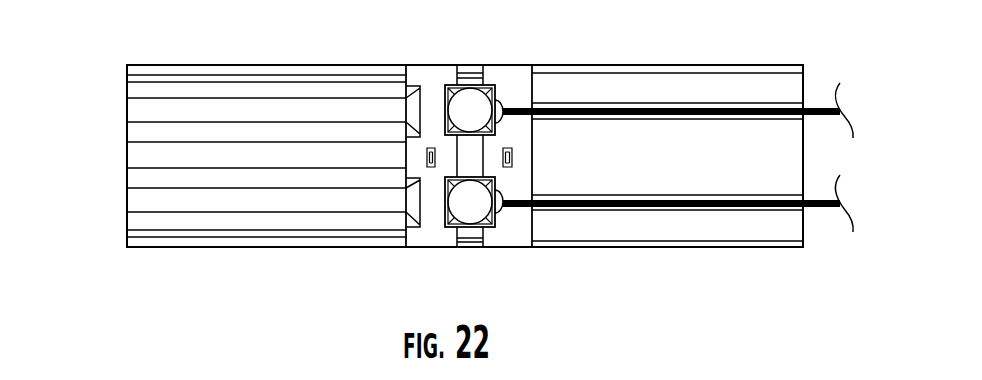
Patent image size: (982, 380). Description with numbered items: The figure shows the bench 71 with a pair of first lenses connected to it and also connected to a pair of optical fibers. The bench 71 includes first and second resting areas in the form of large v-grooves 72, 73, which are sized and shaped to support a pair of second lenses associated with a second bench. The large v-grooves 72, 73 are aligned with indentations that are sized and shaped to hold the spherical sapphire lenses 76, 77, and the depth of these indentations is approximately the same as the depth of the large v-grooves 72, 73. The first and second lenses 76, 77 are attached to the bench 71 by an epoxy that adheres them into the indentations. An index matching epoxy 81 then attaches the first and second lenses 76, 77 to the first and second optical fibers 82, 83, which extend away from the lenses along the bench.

The bench 71 is at (686, 166).
The first large v-groove 72 is at (150, 203).
The second large v-groove 73 is at (150, 109).
The first lens 76 is at (467, 212).
The second lens 77 is at (479, 102).
The index matching epoxy 81 is at (500, 99).
The first optical fiber 82 is at (513, 207).
The second optical fiber 83 is at (513, 116).